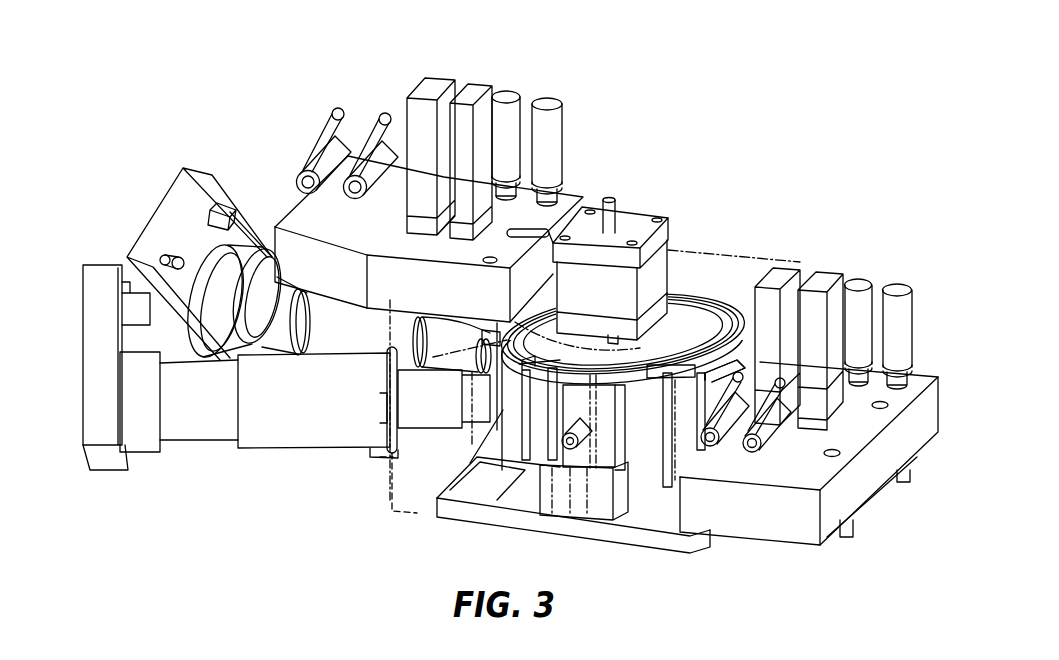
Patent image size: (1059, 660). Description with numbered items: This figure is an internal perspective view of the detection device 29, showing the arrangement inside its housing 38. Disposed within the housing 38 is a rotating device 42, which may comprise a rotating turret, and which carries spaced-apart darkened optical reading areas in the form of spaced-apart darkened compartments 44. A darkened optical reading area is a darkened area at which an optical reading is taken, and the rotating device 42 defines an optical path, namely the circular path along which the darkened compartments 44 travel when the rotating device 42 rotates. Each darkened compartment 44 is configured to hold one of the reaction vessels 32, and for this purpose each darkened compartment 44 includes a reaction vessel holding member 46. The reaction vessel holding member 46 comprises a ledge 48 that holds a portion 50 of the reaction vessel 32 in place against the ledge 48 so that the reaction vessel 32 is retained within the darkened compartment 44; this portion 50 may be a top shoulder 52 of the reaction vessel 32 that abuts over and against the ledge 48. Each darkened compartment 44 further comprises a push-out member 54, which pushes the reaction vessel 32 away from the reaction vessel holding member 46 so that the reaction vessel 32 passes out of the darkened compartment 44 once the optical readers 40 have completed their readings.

The detection device 29 is at (742, 172).
The reaction vessel 32 is at (542, 425).
The housing 38 is at (395, 485).
The optical reader 40 is at (170, 214).
The rotating device 42 is at (684, 318).
The darkened compartment 44 is at (524, 452).
The reaction vessel holding member 46 is at (672, 360).
The ledge 48 is at (672, 360).
The portion of the reaction vessel 50 is at (555, 340).
The top shoulder 52 is at (503, 345).
The push-out member 54 is at (735, 365).